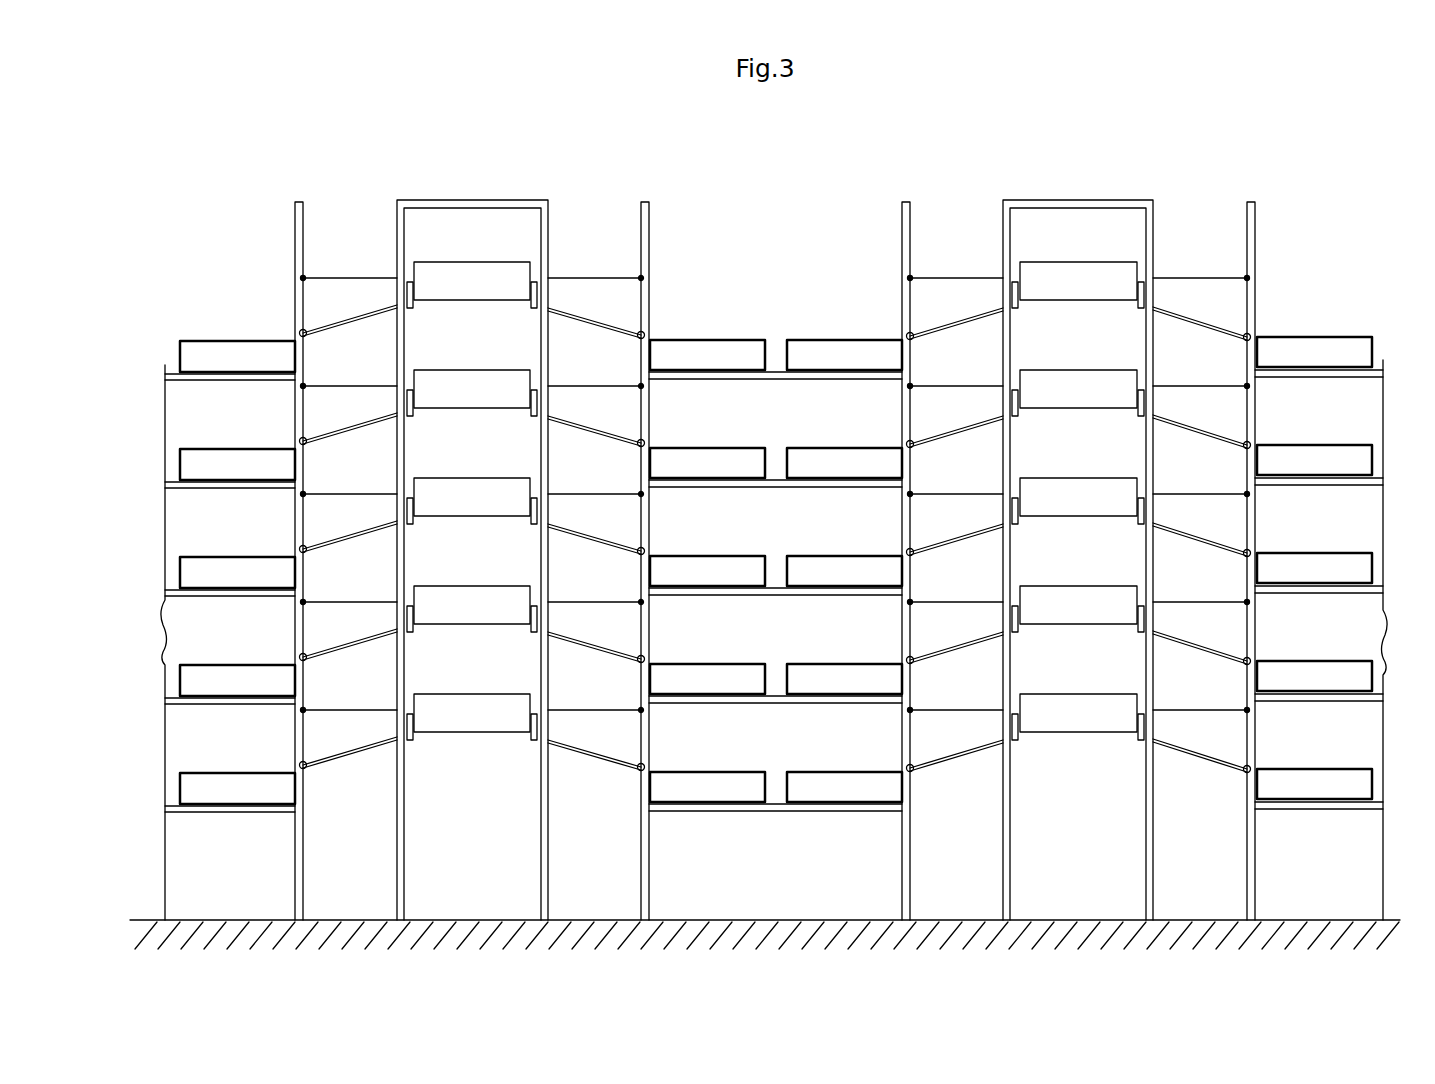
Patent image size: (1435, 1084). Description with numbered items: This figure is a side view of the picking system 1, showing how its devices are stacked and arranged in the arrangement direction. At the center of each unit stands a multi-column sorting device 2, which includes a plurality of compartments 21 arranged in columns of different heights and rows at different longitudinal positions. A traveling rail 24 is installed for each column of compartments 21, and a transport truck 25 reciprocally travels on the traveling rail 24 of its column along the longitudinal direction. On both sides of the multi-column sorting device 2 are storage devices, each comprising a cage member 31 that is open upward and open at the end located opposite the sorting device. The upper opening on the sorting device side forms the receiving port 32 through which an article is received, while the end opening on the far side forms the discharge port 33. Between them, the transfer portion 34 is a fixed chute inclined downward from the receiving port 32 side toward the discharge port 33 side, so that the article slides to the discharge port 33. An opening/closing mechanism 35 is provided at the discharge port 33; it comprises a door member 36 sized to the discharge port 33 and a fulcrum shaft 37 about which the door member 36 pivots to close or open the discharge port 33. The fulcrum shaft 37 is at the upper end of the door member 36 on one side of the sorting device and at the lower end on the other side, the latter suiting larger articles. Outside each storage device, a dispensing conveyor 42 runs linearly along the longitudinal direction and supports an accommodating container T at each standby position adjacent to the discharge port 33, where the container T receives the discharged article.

The picking system 1 is at (216, 160).
The multi-column sorting device 2 is at (466, 192).
The compartment 21 is at (395, 237).
The traveling rail 24 is at (537, 312).
The transport truck 25 is at (440, 265).
The cage member 31 is at (725, 515).
The receiving port 32 is at (362, 295).
The discharge port 33 is at (322, 418).
The transfer portion 34 is at (337, 328).
The opening/closing mechanism 35 is at (762, 505).
The door member 36 is at (296, 292).
The fulcrum shaft 37 is at (296, 333).
The dispensing conveyor 42 is at (205, 375).
The accommodating container T is at (185, 342).